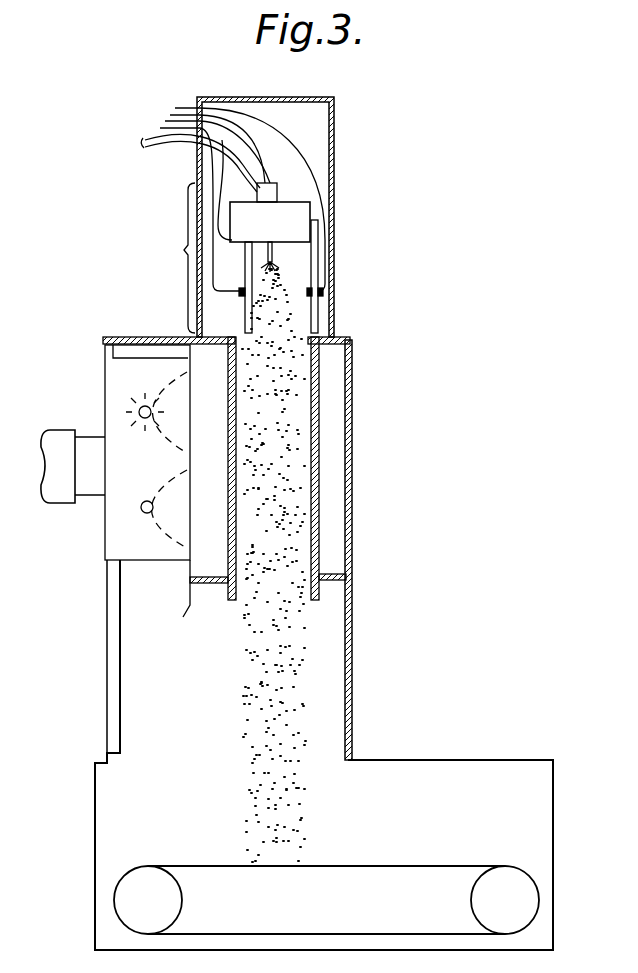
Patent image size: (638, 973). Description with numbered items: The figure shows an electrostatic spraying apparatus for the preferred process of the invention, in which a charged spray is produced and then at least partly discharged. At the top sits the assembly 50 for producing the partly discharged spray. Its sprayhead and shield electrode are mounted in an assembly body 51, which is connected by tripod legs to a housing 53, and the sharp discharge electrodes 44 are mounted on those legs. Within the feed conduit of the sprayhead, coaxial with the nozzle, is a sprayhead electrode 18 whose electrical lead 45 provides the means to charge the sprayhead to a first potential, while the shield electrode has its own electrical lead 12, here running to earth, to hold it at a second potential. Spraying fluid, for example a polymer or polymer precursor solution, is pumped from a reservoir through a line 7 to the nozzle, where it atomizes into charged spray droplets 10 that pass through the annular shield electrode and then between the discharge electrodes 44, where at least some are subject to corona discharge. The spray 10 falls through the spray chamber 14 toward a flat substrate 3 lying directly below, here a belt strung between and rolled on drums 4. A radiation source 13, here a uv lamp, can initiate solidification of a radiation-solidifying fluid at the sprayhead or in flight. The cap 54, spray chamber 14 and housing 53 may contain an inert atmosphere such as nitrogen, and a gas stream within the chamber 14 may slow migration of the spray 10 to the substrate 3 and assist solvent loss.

The flat substrate 3 is at (198, 865).
The drums 4 is at (130, 895).
The line 7 is at (157, 145).
The spray droplets 10 is at (270, 307).
The electrical lead 12 is at (160, 115).
The radiation source 13 is at (140, 408).
The spray chamber 14 is at (320, 450).
The sprayhead electrode 18 is at (267, 170).
The discharge electrodes 44 is at (320, 291).
The electrical lead 45 is at (337, 259).
The assembly 50 is at (184, 248).
The assembly body 51 is at (288, 218).
The housing 53 is at (93, 777).
The cap 54 is at (335, 113).